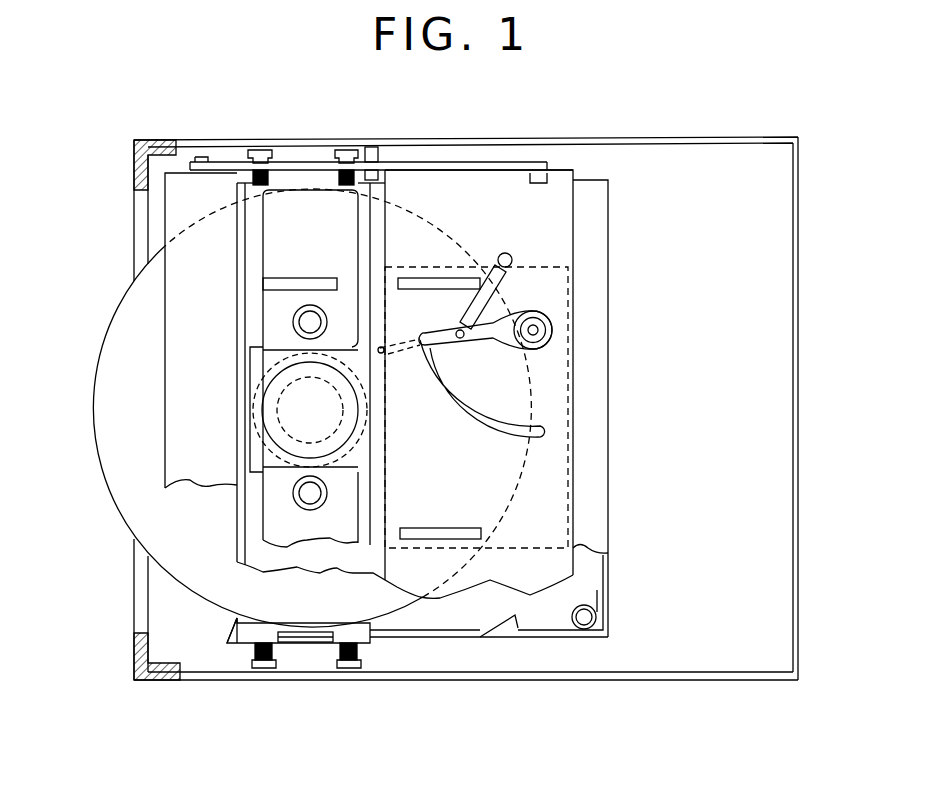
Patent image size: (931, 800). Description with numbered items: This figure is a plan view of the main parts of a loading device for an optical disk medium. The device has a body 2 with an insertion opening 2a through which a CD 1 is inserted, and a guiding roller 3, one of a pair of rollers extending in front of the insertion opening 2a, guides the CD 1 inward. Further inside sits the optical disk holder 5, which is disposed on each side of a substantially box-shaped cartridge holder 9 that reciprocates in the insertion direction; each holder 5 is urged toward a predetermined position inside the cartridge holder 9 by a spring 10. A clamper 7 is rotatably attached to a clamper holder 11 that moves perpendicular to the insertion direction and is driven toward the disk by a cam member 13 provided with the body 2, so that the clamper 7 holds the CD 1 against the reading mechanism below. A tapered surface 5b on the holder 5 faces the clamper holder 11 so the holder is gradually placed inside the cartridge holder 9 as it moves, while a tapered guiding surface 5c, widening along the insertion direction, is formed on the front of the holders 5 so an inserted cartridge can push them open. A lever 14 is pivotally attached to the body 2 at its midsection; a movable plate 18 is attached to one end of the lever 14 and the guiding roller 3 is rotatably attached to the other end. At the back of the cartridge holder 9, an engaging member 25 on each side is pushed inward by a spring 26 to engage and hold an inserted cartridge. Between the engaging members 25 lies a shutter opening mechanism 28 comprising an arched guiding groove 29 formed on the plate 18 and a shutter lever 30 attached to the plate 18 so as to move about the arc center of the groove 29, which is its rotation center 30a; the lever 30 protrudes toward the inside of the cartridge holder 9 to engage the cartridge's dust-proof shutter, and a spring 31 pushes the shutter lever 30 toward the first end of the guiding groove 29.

The CD 1 is at (100, 415).
The body 2 is at (134, 668).
The insertion opening 2a is at (134, 592).
The guiding roller 3 is at (175, 355).
The optical disk holder 5 is at (372, 150).
The tapered surface 5b is at (309, 641).
The tapered guiding surface 5c is at (238, 633).
The clamper 7 is at (283, 364).
The cartridge holder 9 is at (605, 385).
The spring 10 is at (258, 653).
The clamper holder 11 is at (303, 215).
The cam member 13 is at (449, 278).
The lever 14 is at (485, 162).
The movable plate 18 is at (500, 210).
The engaging member 25 is at (508, 625).
The spring 26 is at (598, 600).
The shutter opening mechanism 28 is at (536, 349).
The guiding groove 29 is at (490, 433).
The shutter lever 30 is at (507, 318).
The rotation center 30a is at (552, 327).
The spring 31 is at (505, 282).